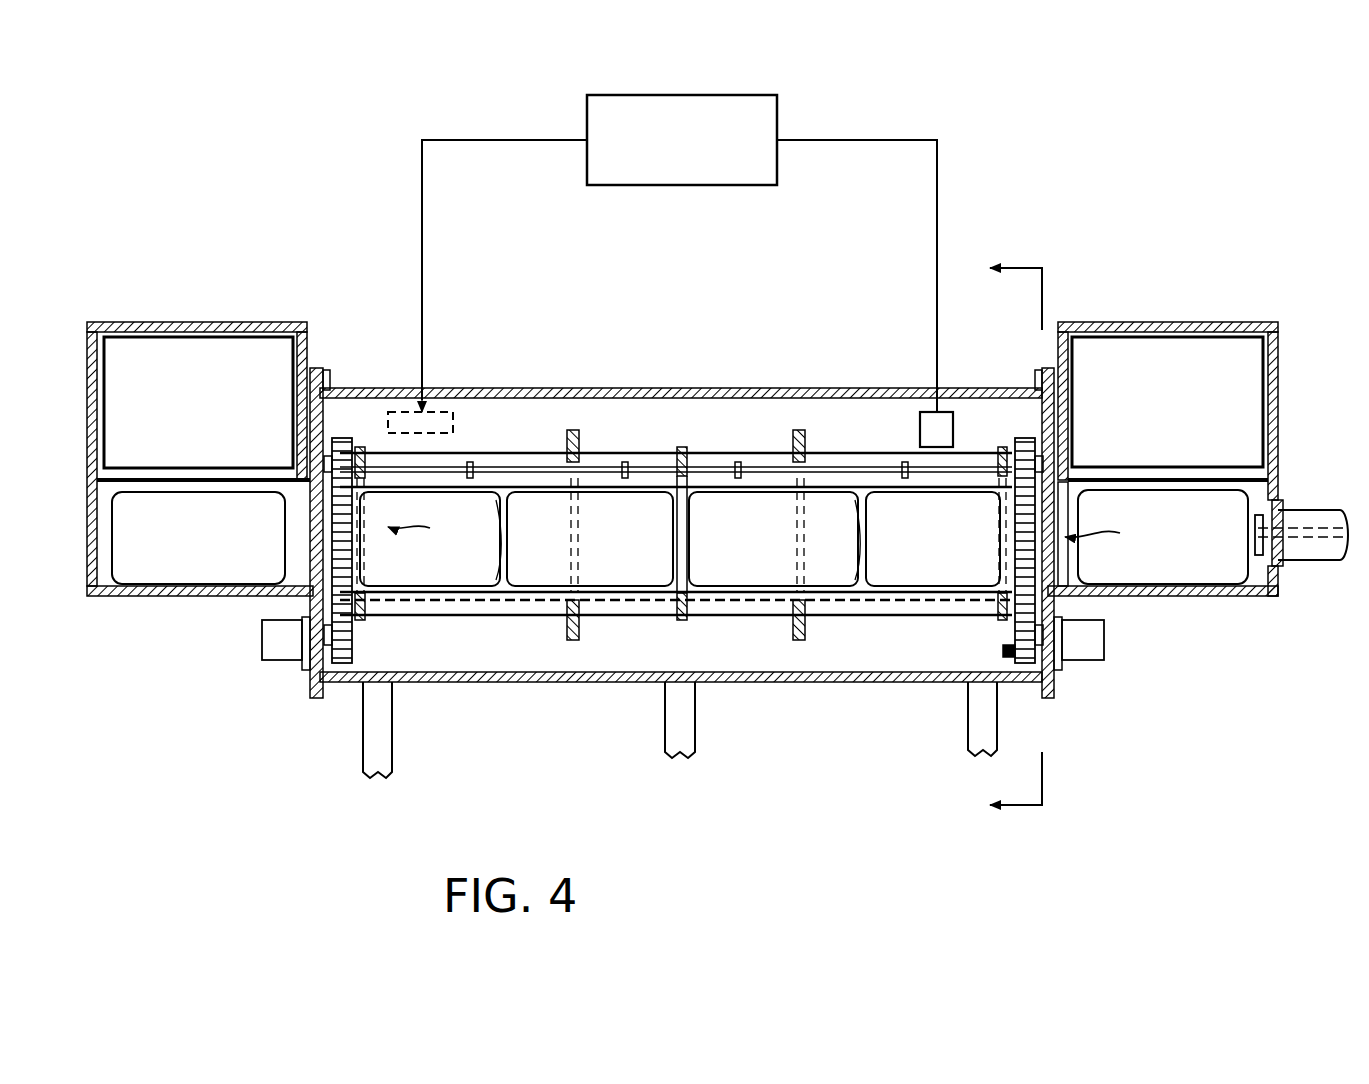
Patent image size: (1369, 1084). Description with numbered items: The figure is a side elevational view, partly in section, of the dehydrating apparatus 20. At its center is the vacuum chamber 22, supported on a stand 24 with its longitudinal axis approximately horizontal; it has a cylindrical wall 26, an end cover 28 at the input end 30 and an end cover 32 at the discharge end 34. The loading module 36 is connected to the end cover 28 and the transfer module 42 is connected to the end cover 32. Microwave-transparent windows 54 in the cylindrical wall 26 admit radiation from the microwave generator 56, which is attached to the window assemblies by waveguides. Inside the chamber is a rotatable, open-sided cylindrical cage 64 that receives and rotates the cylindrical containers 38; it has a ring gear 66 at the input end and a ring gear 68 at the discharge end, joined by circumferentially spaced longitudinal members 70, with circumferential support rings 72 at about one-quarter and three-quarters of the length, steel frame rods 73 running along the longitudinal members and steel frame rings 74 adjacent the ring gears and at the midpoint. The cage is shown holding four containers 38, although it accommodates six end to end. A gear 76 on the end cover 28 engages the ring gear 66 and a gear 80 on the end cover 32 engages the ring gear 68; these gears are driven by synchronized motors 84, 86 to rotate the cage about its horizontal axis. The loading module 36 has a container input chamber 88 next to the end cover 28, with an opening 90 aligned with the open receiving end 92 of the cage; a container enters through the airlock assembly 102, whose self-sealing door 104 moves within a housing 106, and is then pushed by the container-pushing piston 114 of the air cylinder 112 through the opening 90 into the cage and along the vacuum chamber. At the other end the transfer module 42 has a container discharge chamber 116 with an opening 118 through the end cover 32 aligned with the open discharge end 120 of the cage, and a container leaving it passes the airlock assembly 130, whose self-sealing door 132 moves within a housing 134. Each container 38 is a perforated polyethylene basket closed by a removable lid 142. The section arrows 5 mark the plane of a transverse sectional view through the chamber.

The section line 5- 5 is at (1012, 540).
The dehydrating apparatus 20 is at (1122, 172).
The vacuum chamber 22 is at (548, 388).
The stand 24 is at (360, 755).
The cylindrical wall 26 is at (740, 388).
The end cover 28 is at (1042, 418).
The input end 30 is at (1035, 355).
The end cover 32 is at (330, 432).
The discharge end 34 is at (322, 358).
The loading module 36 is at (1147, 298).
The cylindrical container 38 is at (152, 518).
The transfer module 42 is at (272, 282).
The microwave-transparent window 54 is at (442, 408).
The microwave generator 56 is at (785, 113).
The cylindrical cage 64 is at (730, 640).
The ring gear 66 is at (1045, 550).
The ring gear 68 is at (336, 538).
The longitudinal members 70 is at (522, 455).
The circumferential support rings 72 is at (580, 432).
The steel frame rods 73 is at (748, 467).
The steel frame rings 74 is at (390, 625).
The gear 76 is at (1003, 652).
The gear 80 is at (330, 652).
The motor 84 is at (1082, 642).
The motor 86 is at (276, 640).
The container input chamber 88 is at (1262, 578).
The opening 90 is at (1063, 492).
The receiving end 92 is at (1115, 528).
The airlock assembly 102 is at (1190, 318).
The self-sealing door 104 is at (1180, 405).
The housing 106 is at (1278, 348).
The air cylinder 112 is at (1315, 512).
The container-pushing piston 114 is at (1305, 540).
The container discharge chamber 116 is at (104, 568).
The opening 118 is at (302, 495).
The discharge end 120 is at (434, 531).
The airlock assembly 130 is at (198, 318).
The self-sealing door 132 is at (195, 418).
The housing 134 is at (162, 320).
The removable lid 142 is at (1260, 500).